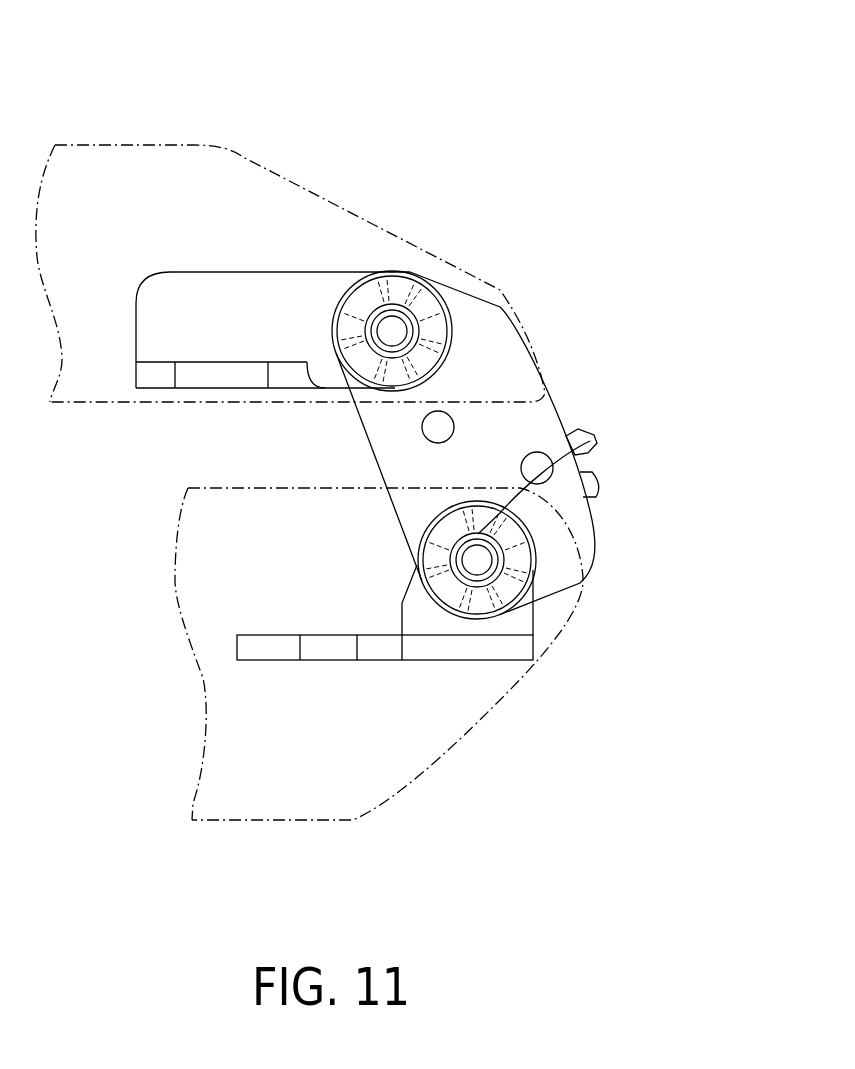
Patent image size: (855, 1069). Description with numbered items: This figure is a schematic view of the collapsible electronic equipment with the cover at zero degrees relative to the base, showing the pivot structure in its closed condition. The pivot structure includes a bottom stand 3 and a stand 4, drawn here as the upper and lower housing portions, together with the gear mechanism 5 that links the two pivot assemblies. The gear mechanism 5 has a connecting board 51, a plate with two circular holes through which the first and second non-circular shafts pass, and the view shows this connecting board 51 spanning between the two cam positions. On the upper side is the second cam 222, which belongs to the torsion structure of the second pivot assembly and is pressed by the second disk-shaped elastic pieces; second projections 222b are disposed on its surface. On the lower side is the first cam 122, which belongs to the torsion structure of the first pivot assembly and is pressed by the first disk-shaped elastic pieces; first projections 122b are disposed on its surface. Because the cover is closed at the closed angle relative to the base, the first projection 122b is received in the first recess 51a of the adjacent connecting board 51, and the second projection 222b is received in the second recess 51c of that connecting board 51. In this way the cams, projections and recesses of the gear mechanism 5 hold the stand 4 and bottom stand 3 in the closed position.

The bottom stand 3 is at (435, 643).
The stand 4 is at (192, 297).
The gear mechanism 5 is at (603, 528).
The connecting board 51 is at (537, 402).
The first recess 51a is at (597, 437).
The second recess 51c is at (390, 272).
The first cam 122 is at (440, 548).
The first projection 122b is at (483, 503).
The second cam 222 is at (352, 277).
The second projection 222b is at (415, 295).